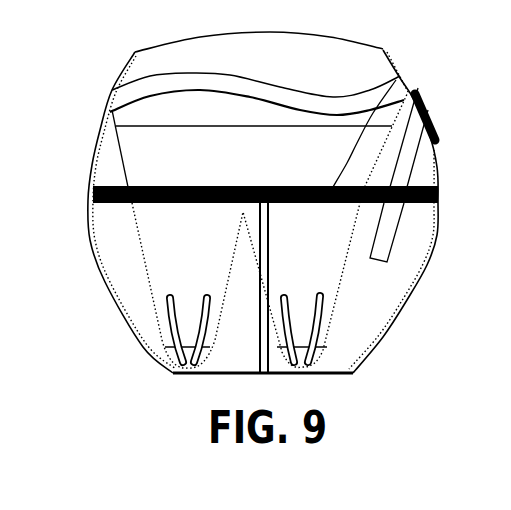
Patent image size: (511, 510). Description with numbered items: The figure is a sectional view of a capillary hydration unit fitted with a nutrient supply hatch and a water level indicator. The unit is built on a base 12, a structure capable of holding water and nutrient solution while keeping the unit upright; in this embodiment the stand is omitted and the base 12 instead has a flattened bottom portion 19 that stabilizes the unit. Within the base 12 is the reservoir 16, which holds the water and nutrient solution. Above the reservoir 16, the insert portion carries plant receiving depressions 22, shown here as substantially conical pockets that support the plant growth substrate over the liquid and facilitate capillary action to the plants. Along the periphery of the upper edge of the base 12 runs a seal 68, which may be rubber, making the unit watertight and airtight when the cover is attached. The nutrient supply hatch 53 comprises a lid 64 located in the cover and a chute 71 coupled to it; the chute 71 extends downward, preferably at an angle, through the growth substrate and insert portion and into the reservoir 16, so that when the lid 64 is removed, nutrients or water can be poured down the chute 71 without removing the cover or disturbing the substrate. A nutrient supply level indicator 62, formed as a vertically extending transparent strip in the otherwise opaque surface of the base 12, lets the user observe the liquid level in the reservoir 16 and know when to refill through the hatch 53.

The base 12 is at (393, 333).
The reservoir 16 is at (413, 235).
The flattened bottom portion 19 is at (173, 373).
The plant receiving depressions 22 is at (205, 253).
The nutrient supply hatch 53 is at (432, 108).
The nutrient supply level indicator 62 is at (264, 333).
The lid 64 is at (416, 96).
The seal 68 is at (93, 191).
The chute 71 is at (410, 166).